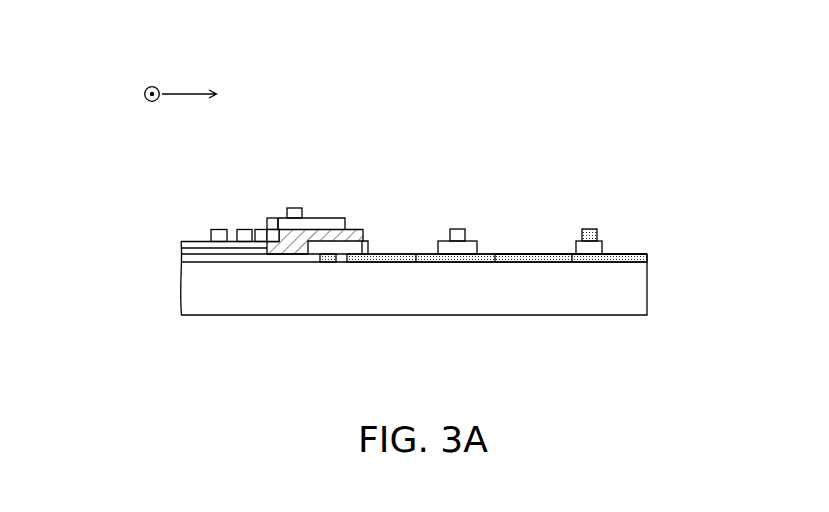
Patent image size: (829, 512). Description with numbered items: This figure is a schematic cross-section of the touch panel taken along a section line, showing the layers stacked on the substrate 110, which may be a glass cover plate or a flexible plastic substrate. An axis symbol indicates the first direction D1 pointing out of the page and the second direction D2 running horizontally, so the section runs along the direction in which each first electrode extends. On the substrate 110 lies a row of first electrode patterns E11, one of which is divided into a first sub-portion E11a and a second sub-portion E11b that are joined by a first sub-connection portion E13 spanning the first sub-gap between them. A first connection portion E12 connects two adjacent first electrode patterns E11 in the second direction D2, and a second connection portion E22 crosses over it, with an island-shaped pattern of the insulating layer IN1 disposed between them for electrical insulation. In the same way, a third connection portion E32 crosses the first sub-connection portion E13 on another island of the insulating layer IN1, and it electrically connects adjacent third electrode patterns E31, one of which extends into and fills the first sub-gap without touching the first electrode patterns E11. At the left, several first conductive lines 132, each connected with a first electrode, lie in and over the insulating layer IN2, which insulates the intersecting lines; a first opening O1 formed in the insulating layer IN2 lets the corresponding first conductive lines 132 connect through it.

The substrate 110 is at (200, 298).
The first conductive line 132 is at (285, 247).
The insulating layer IN1 is at (193, 258).
The insulating layer IN2 is at (193, 245).
The first opening O1 is at (269, 232).
The first electrode pattern E11 is at (374, 262).
The first sub-portion E11a is at (533, 262).
The second sub-portion E11b is at (627, 262).
The first connection portion E12 is at (455, 262).
The first sub-connection portion E13 is at (573, 254).
The second connection portion E22 is at (460, 229).
The third electrode pattern E31 is at (325, 262).
The third connection portion E32 is at (590, 229).
The first direction D1 is at (140, 129).
The second direction D2 is at (272, 92).